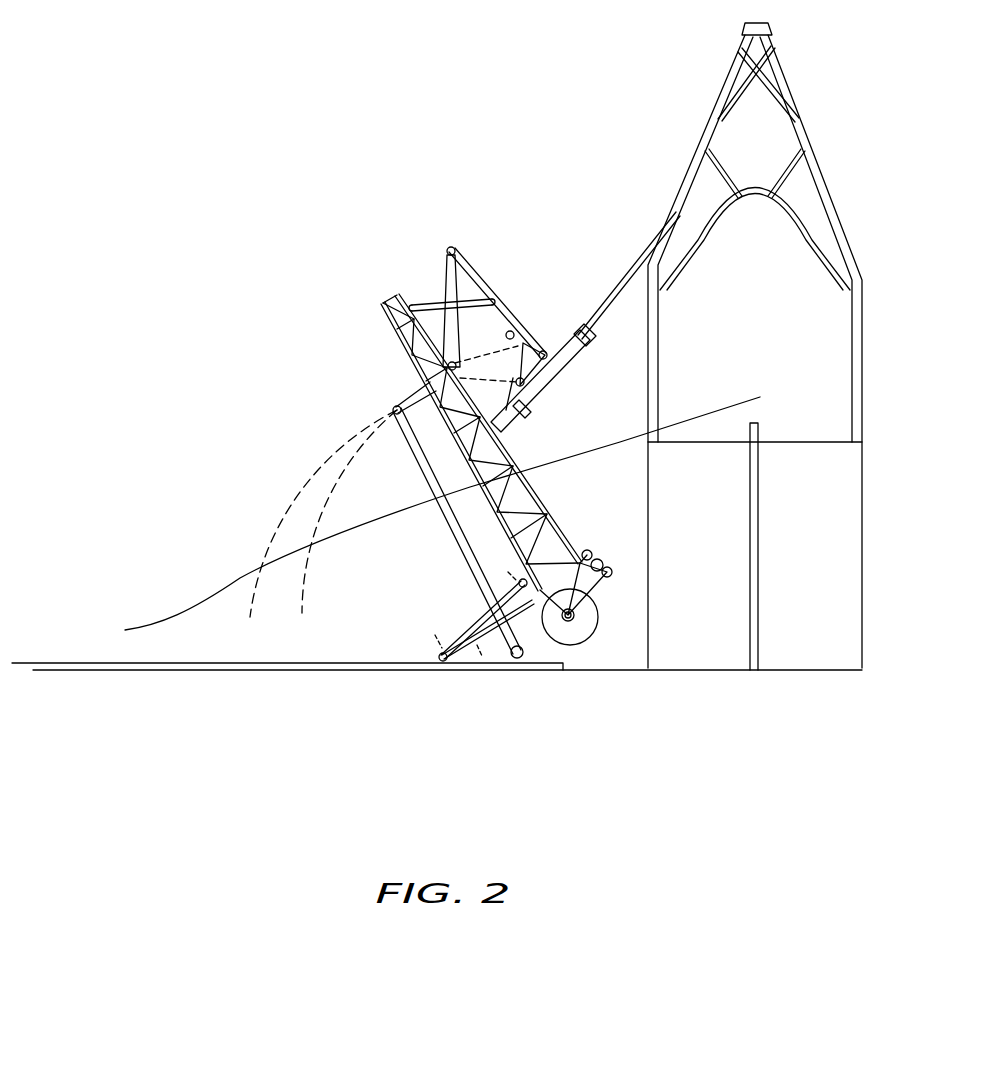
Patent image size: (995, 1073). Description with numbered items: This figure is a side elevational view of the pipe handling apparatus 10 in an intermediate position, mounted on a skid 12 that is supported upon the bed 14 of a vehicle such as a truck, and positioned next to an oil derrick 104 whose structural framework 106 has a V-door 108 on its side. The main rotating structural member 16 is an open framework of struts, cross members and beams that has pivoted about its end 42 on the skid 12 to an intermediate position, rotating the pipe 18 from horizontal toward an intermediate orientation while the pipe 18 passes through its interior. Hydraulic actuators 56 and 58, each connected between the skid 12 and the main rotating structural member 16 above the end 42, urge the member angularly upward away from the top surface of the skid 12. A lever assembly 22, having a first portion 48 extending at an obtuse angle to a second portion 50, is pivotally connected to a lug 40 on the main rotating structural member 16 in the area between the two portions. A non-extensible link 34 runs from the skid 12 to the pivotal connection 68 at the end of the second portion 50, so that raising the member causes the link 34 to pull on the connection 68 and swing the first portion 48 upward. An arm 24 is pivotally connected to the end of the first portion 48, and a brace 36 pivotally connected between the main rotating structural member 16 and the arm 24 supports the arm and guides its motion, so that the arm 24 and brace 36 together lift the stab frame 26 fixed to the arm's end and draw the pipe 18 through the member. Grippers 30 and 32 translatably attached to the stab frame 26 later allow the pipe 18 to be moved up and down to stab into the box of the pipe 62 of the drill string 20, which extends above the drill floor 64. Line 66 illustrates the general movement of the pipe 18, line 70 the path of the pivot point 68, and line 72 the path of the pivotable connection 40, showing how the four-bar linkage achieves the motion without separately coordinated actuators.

The pipe handling apparatus 10 is at (297, 367).
The skid 12 is at (372, 661).
The bed of a vehicle 14 is at (398, 670).
The main rotating structural member 16 is at (535, 508).
The pipe 18 is at (762, 345).
The drill string 20 is at (755, 518).
The lever assembly 22 is at (462, 328).
The arm 24 is at (487, 294).
The stab frame 26 is at (553, 330).
The gripper 30 is at (587, 342).
The gripper 32 is at (531, 413).
The link 34 is at (455, 530).
The brace 36 is at (465, 300).
The lug 40 is at (458, 378).
The end of main rotating structural member 42 is at (582, 617).
The first portion of lever assembly 48 is at (445, 292).
The second portion of lever assembly 50 is at (415, 386).
The hydraulic actuator 56 is at (475, 625).
The hydraulic actuator 58 is at (520, 618).
The pipe of drill string 62 is at (762, 525).
The drill floor 64 is at (822, 441).
The line 66 is at (197, 606).
The pivotal connection 68 is at (394, 407).
The line 70 is at (312, 483).
The line 72 is at (341, 487).
The oil derrick 104 is at (786, 92).
The structural framework 106 is at (797, 117).
The V-door 108 is at (757, 202).